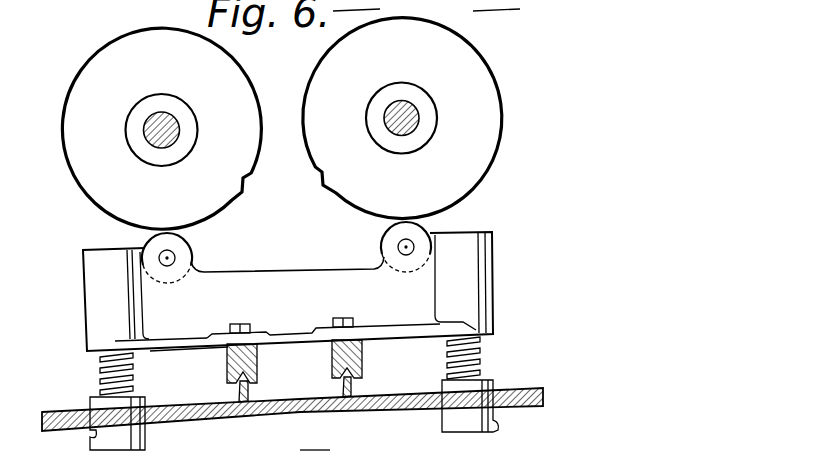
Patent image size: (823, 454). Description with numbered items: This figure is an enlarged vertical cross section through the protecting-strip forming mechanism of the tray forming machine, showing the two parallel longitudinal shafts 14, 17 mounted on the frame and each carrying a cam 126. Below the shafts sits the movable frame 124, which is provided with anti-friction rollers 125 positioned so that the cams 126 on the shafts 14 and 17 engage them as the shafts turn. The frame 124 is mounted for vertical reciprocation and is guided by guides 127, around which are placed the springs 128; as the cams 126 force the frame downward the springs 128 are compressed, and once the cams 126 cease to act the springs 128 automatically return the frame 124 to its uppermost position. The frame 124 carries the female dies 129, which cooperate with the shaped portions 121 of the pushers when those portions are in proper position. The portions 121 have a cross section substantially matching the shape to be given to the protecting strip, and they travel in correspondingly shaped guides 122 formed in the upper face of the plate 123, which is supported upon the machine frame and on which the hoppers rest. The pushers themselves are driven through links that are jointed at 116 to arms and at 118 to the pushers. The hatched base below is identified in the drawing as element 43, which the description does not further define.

The longitudinal shaft 14 is at (416, 112).
The longitudinal shaft 17 is at (172, 118).
The frame rail 43 is at (369, 440).
The joint 116 is at (357, 7).
The joint 118 is at (497, 7).
The portion of pusher 121 is at (258, 376).
The guides 122 is at (239, 395).
The plate 123 is at (415, 397).
The movable frame 124 is at (333, 282).
The anti-friction rollers 125 is at (192, 252).
The cams 126 is at (281, 124).
The guides 127 is at (100, 362).
The springs 128 is at (133, 375).
The female dies 129 is at (208, 345).